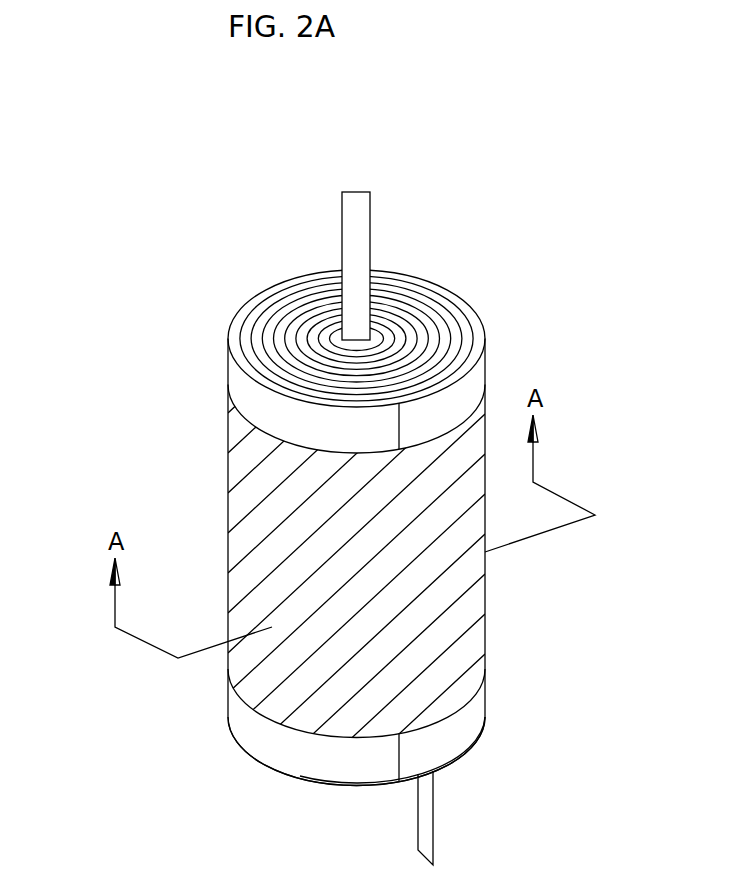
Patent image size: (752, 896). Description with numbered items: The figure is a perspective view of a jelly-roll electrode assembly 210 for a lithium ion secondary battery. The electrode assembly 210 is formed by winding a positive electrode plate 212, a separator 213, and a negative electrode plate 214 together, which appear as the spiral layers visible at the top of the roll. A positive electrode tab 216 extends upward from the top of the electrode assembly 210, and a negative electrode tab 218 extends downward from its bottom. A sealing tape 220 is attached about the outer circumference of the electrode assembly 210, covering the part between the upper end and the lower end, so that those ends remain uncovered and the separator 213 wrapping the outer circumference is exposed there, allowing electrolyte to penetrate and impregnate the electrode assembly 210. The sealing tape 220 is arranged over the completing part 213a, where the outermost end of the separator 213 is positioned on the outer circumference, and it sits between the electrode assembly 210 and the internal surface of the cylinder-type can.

The electrode assembly 210 is at (140, 163).
The positive electrode plate 212 is at (472, 362).
The separator 213 is at (470, 332).
The completing part 213a is at (385, 755).
The negative electrode plate 214 is at (447, 318).
The positive electrode tab 216 is at (359, 203).
The negative electrode tab 218 is at (428, 808).
The sealing tape 220 is at (462, 626).